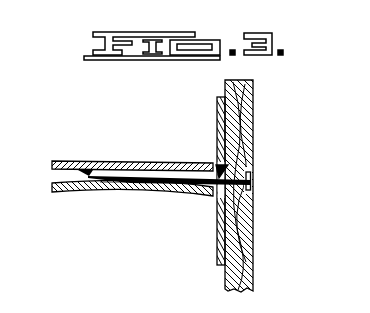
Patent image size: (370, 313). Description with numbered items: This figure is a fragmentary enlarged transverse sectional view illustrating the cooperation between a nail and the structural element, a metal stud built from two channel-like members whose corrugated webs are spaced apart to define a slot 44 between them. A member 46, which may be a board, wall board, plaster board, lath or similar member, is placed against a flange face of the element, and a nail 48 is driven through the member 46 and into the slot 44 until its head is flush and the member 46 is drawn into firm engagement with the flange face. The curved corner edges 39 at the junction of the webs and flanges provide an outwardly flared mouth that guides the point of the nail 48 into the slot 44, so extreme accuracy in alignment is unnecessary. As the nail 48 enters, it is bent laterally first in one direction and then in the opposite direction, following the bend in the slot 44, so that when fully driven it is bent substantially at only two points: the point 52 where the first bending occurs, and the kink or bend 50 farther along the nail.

The member 46 is at (251, 247).
The slot 44 is at (75, 173).
The curved corner edge 39 is at (213, 193).
The point of first bending 52 is at (210, 176).
The kink or bend 50 is at (131, 169).
The nail 48 is at (254, 185).